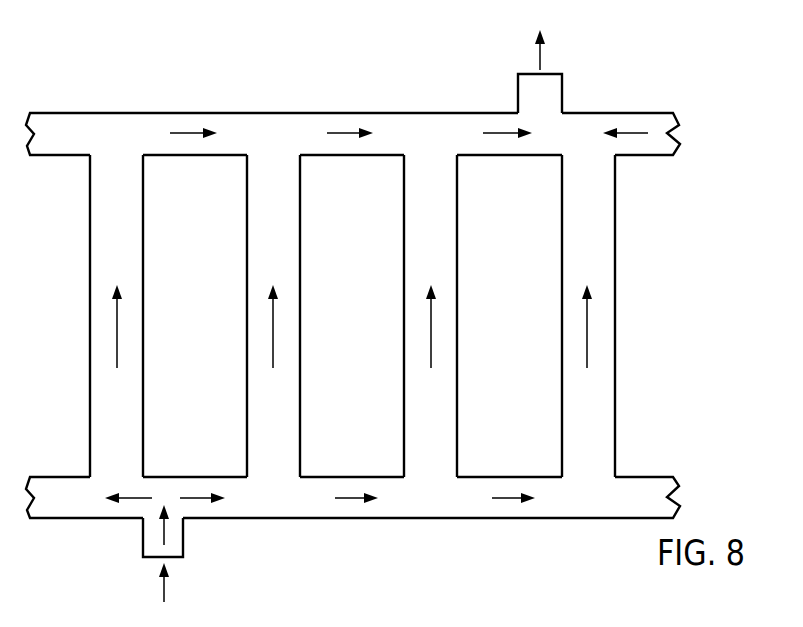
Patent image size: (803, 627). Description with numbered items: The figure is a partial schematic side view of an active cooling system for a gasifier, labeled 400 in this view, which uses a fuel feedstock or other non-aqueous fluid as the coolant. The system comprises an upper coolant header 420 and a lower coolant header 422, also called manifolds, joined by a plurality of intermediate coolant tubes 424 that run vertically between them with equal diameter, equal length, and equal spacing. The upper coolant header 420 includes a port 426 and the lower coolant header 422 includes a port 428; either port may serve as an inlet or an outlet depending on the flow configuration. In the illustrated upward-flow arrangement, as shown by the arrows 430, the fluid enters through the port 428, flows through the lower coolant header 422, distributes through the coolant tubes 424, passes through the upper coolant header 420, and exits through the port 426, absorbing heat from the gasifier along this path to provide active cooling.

The fluid distribution structure 400 is at (353, 317).
The upper coolant header 420 is at (378, 118).
The lower coolant header 422 is at (274, 512).
The intermediate coolant tubes 424 is at (138, 248).
The port 426 is at (562, 100).
The port 428 is at (184, 530).
The arrows 430 is at (338, 131).